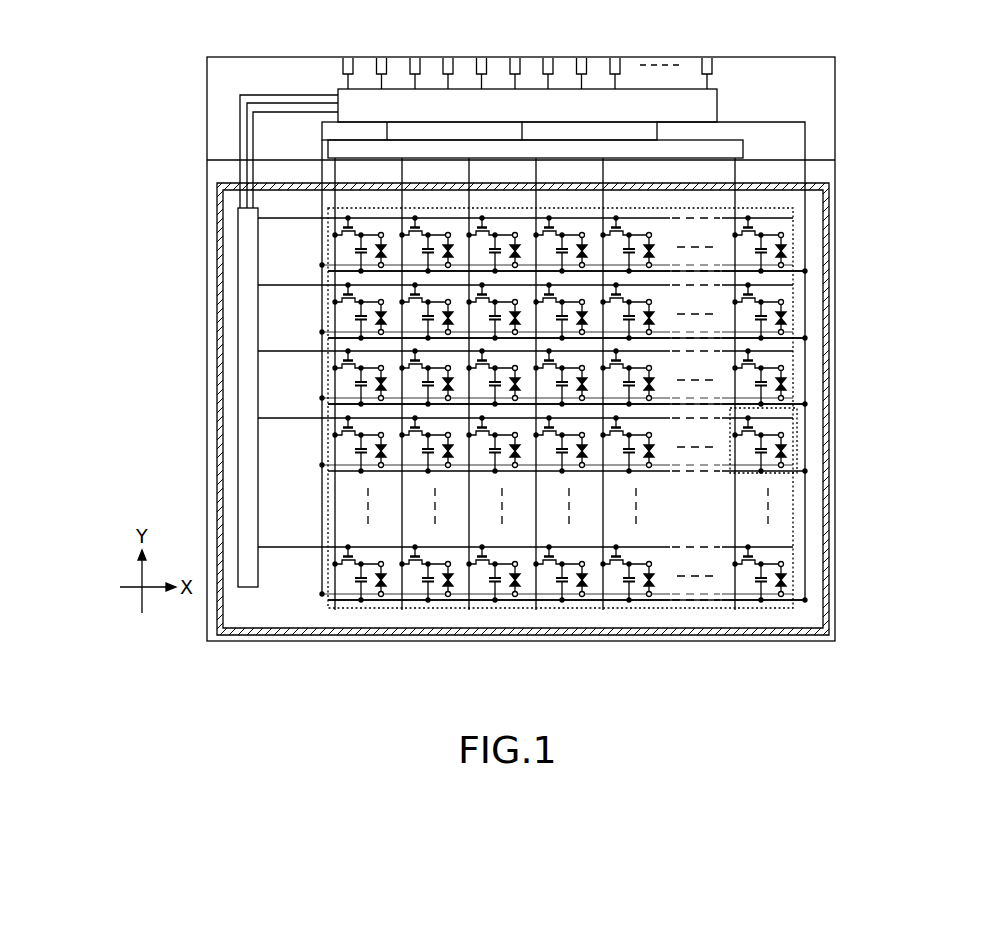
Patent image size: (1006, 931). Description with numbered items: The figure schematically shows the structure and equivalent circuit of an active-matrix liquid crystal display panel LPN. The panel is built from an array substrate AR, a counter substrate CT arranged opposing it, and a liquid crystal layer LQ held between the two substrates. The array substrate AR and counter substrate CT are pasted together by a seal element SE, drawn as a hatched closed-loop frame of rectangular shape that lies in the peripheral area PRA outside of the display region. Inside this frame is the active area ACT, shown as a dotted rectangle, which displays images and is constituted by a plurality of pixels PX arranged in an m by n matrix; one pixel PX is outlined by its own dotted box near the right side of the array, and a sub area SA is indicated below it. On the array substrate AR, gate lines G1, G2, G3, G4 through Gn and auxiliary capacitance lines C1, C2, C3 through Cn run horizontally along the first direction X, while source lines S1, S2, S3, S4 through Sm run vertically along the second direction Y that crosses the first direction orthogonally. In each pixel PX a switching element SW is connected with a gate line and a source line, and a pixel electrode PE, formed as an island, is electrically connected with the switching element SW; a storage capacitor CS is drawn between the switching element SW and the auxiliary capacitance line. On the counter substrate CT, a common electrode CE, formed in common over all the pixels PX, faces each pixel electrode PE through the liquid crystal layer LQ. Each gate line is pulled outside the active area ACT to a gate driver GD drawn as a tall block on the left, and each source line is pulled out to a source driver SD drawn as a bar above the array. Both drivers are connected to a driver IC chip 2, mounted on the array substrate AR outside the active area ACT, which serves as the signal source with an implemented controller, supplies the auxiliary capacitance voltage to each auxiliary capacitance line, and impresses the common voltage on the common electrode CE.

The liquid crystal display panel LPN is at (579, 345).
The array substrate AR is at (206, 100).
The counter substrate CT is at (835, 157).
The driver IC chip 2 is at (718, 84).
The source driver SD is at (745, 146).
The gate driver GD is at (237, 494).
The seal element SE is at (830, 552).
The active area ACT is at (793, 292).
The peripheral area PRA is at (811, 514).
The pixel PX is at (791, 448).
The switching element SW is at (738, 428).
The storage capacitor CS is at (755, 450).
The pixel electrode PE is at (784, 433).
The common electrode CE is at (784, 465).
The liquid crystal layer LQ is at (787, 446).
The sub area SA is at (722, 475).
The source line S1 is at (338, 171).
The source line S2 is at (405, 171).
The source line S3 is at (472, 171).
The source line S4 is at (539, 171).
The source line Sm is at (738, 171).
The gate line G1 is at (310, 222).
The gate line G2 is at (274, 283).
The gate line G3 is at (274, 350).
The gate line G4 is at (274, 417).
The gate line Gn is at (274, 546).
The auxiliary capacitance line C1 is at (797, 270).
The auxiliary capacitance line C2 is at (797, 337).
The auxiliary capacitance line C3 is at (797, 403).
The auxiliary capacitance line Cn is at (800, 597).